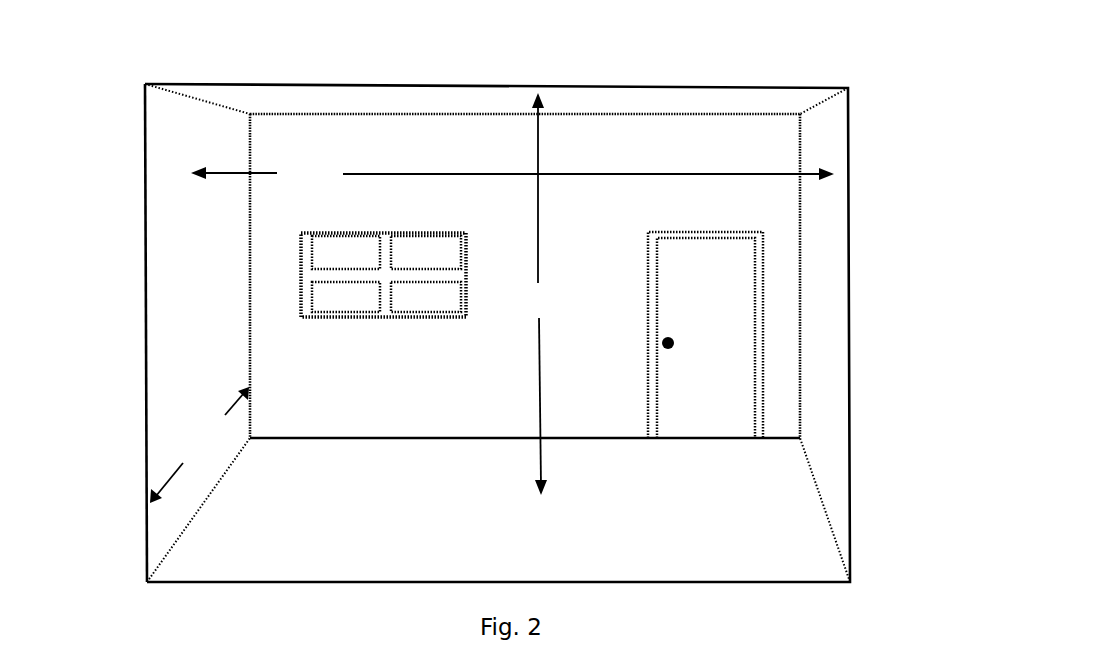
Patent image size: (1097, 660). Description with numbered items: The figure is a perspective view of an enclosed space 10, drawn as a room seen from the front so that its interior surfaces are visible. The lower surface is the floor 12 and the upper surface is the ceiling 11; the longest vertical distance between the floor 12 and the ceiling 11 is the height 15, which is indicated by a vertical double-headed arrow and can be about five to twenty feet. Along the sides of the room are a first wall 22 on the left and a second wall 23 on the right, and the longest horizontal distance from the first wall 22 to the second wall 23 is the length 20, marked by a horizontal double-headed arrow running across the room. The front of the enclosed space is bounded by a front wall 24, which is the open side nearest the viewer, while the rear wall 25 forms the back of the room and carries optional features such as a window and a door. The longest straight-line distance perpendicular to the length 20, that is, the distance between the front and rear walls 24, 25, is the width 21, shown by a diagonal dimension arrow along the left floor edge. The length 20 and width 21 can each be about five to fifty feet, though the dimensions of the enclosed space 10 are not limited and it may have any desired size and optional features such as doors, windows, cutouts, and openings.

The enclosed space 10 is at (879, 69).
The ceiling 11 is at (308, 104).
The floor 12 is at (384, 547).
The height 15 is at (536, 294).
The length 20 is at (512, 175).
The width 21 is at (199, 445).
The first wall 22 is at (206, 289).
The second wall 23 is at (818, 297).
The front wall 24 is at (147, 528).
The rear wall 25 is at (330, 388).